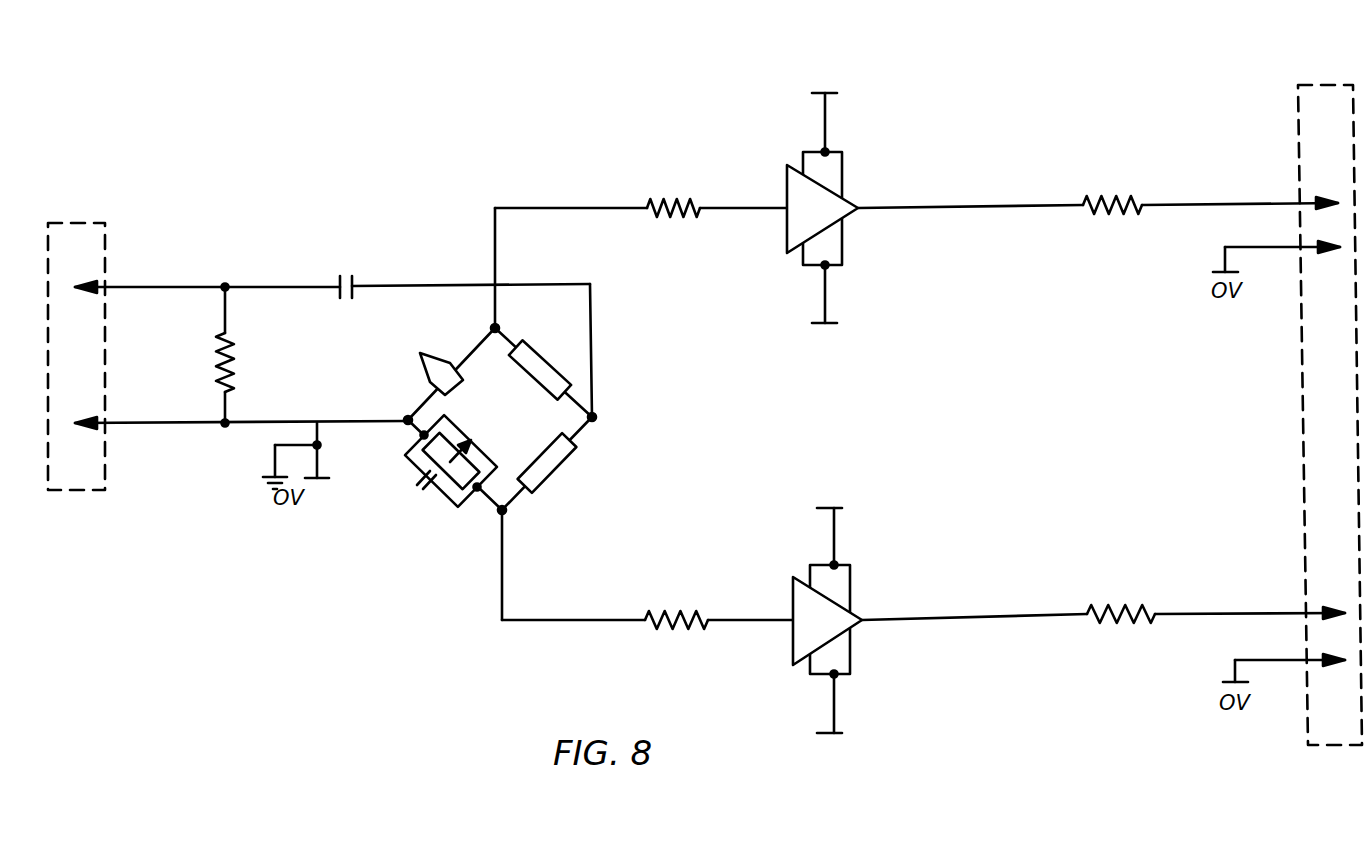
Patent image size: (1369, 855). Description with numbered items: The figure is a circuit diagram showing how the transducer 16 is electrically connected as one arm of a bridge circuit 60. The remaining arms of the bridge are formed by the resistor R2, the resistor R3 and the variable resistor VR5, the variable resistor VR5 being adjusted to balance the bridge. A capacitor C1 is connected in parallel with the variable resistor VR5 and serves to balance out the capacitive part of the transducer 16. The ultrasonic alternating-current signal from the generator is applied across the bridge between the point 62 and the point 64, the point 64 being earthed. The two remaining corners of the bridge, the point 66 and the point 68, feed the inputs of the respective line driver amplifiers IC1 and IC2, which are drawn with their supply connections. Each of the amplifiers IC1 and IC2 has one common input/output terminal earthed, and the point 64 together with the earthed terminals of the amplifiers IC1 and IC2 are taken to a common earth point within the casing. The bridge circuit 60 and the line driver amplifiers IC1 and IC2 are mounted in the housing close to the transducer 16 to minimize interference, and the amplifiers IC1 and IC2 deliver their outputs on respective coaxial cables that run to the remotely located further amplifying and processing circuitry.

The transducer 16 is at (420, 373).
The bridge circuit 60 is at (452, 538).
The bridge point 62 is at (595, 420).
The bridge point 64 is at (404, 423).
The bridge point 66 is at (499, 327).
The bridge point 68 is at (506, 512).
The resistor R2 is at (551, 365).
The resistor R3 is at (558, 470).
The variable resistor VR5 is at (467, 462).
The capacitor C1 is at (428, 494).
The line driver amplifier IC1 is at (843, 172).
The line driver amplifier IC2 is at (852, 592).